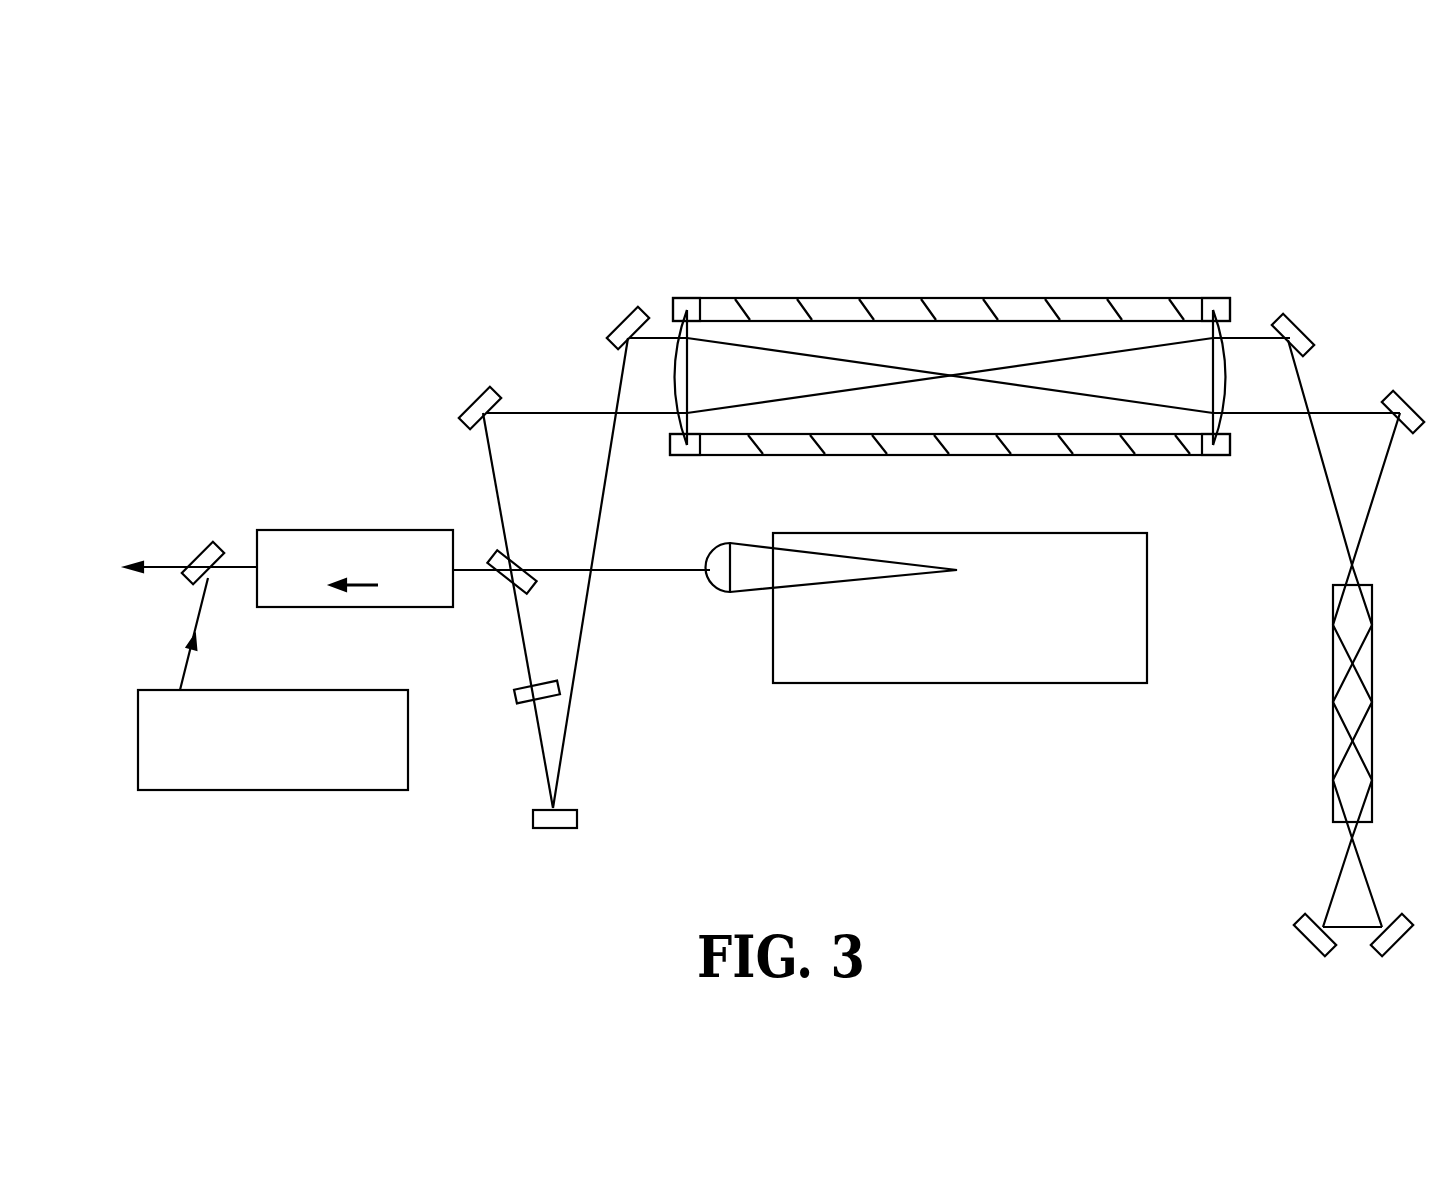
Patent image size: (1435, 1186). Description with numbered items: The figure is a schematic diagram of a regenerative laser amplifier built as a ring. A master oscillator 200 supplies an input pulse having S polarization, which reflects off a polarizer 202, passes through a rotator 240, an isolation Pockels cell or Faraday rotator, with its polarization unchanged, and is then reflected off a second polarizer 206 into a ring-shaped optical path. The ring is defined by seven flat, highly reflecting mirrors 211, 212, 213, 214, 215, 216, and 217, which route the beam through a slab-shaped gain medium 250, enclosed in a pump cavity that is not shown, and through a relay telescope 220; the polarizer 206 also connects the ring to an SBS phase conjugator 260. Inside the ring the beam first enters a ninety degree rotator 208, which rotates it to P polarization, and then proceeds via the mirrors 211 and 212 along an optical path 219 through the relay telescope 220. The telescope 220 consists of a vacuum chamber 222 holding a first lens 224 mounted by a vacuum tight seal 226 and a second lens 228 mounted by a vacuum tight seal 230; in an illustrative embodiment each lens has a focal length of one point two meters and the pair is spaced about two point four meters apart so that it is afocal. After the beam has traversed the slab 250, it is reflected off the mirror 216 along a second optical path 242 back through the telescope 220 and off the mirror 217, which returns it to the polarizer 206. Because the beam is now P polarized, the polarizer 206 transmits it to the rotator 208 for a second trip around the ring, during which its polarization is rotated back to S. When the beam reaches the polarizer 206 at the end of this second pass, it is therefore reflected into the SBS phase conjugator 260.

The master oscillator 200 is at (273, 774).
The polarizer 202 is at (189, 526).
The polarizer 206 is at (484, 604).
The 90 degree rotator 208 is at (501, 728).
The flat highly reflecting mirror 211 is at (610, 808).
The flat highly reflecting mirror 212 is at (600, 314).
The flat highly reflecting mirror 213 is at (1395, 385).
The flat highly reflecting mirror 214 is at (1384, 965).
The flat highly reflecting mirror 215 is at (1289, 961).
The flat highly reflecting mirror 216 is at (1330, 322).
The flat highly reflecting mirror 217 is at (450, 392).
The optical path 219 is at (950, 318).
The relay telescope 220 is at (918, 315).
The vacuum chamber 222 is at (950, 346).
The first lens 224 is at (619, 377).
The vacuum tight seal 226 is at (713, 345).
The second lens 228 is at (1173, 377).
The vacuum tight seal 230 is at (1243, 346).
The rotator 240 is at (355, 528).
The optical path 242 is at (966, 224).
The slab-shaped gain medium 250 is at (1307, 703).
The SBS phase conjugator 260 is at (960, 645).